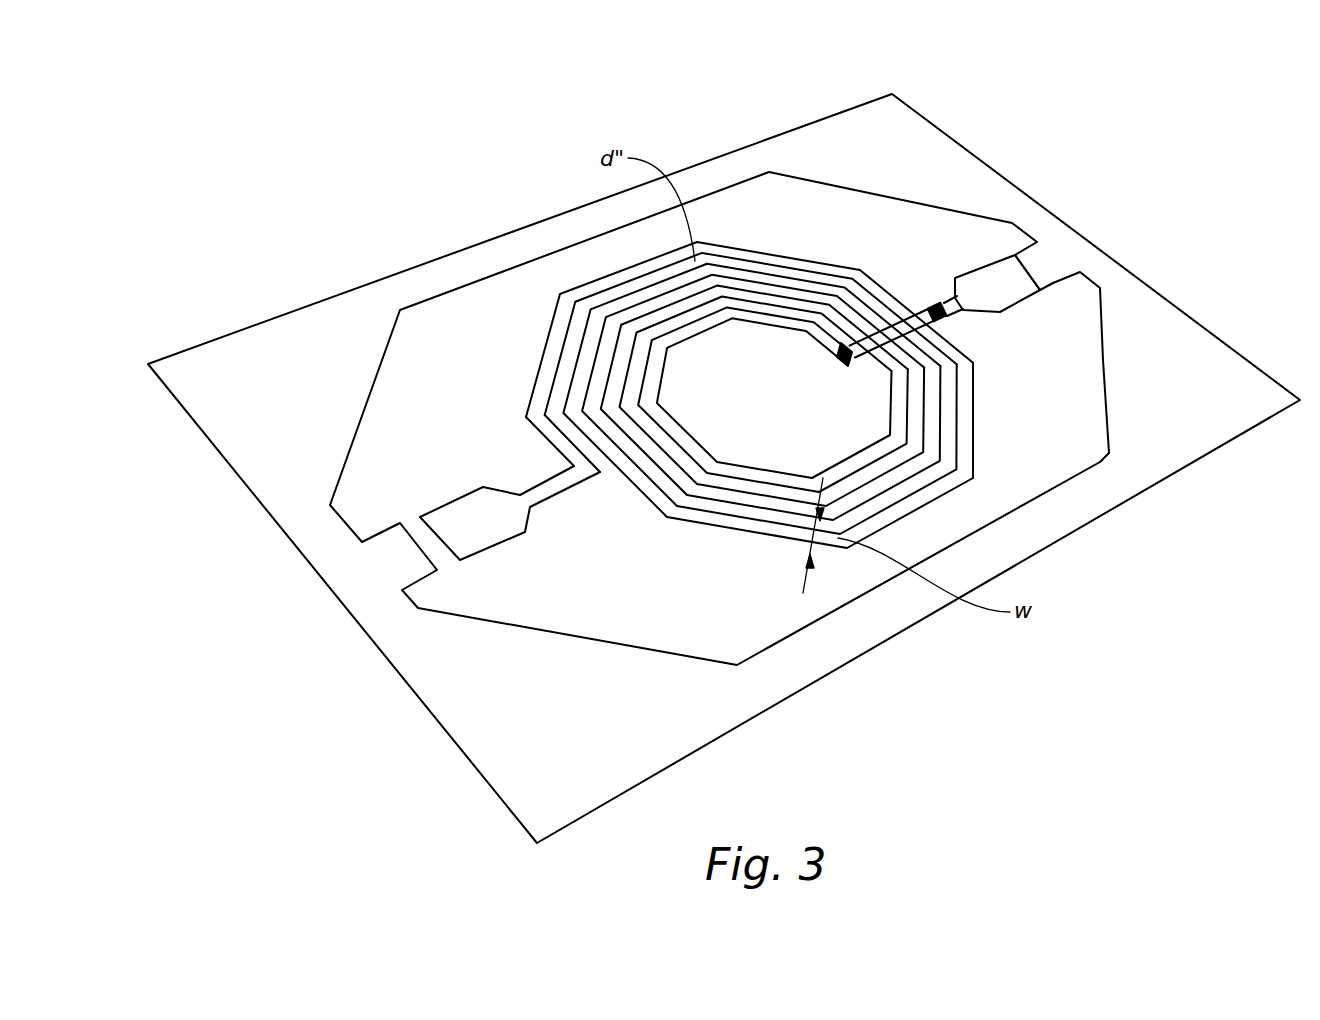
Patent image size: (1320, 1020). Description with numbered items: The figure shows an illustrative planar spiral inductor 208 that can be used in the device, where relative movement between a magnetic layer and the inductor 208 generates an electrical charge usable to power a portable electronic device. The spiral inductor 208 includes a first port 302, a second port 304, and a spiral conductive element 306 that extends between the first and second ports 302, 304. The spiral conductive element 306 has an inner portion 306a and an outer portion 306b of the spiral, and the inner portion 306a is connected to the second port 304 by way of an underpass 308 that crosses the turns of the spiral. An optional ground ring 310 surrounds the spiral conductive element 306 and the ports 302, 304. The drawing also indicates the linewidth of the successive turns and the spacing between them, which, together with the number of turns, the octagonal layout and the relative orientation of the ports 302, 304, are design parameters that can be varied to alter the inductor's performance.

The planar spiral inductor 208 is at (300, 172).
The first port 302 is at (457, 530).
The second port 304 is at (1000, 273).
The spiral conductive element 306 is at (597, 277).
The inner portion 306a is at (845, 350).
The outer portion 306b is at (583, 472).
The underpass 308 is at (882, 340).
The ground ring 310 is at (620, 755).